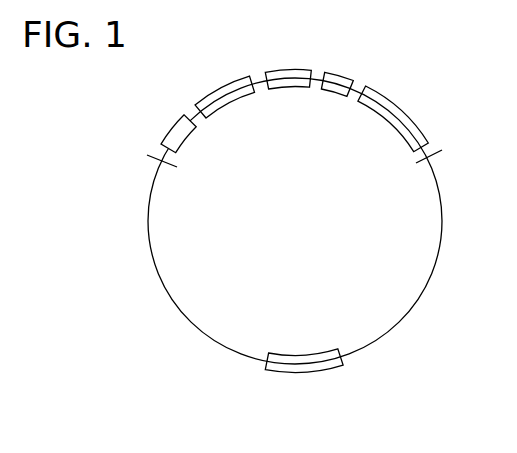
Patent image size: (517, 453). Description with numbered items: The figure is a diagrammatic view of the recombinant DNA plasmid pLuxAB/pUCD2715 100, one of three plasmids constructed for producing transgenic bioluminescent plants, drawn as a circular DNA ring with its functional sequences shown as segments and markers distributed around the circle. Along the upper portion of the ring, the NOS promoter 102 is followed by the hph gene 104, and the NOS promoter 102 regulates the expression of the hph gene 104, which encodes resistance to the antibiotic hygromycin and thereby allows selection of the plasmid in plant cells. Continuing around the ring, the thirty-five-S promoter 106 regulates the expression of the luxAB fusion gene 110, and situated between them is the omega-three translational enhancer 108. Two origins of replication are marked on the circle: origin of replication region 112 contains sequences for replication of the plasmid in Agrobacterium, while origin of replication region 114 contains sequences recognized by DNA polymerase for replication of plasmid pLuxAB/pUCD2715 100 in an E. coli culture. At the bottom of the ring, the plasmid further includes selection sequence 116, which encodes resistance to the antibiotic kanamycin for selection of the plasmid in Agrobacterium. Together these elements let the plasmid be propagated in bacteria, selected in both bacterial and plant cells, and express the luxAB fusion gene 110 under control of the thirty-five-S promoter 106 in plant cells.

The plasmid pLuxAB/pUCD2715 100 is at (197, 330).
The NOS promoter 102 is at (178, 132).
The hph gene 104 is at (222, 93).
The 35S promoter 106 is at (290, 73).
The Ω-3 translational enhancer 108 is at (336, 74).
The luxAB fusion gene 110 is at (401, 112).
The origin of replication region 112 is at (162, 167).
The origin of replication region 114 is at (430, 162).
The selection sequence 116 is at (307, 375).